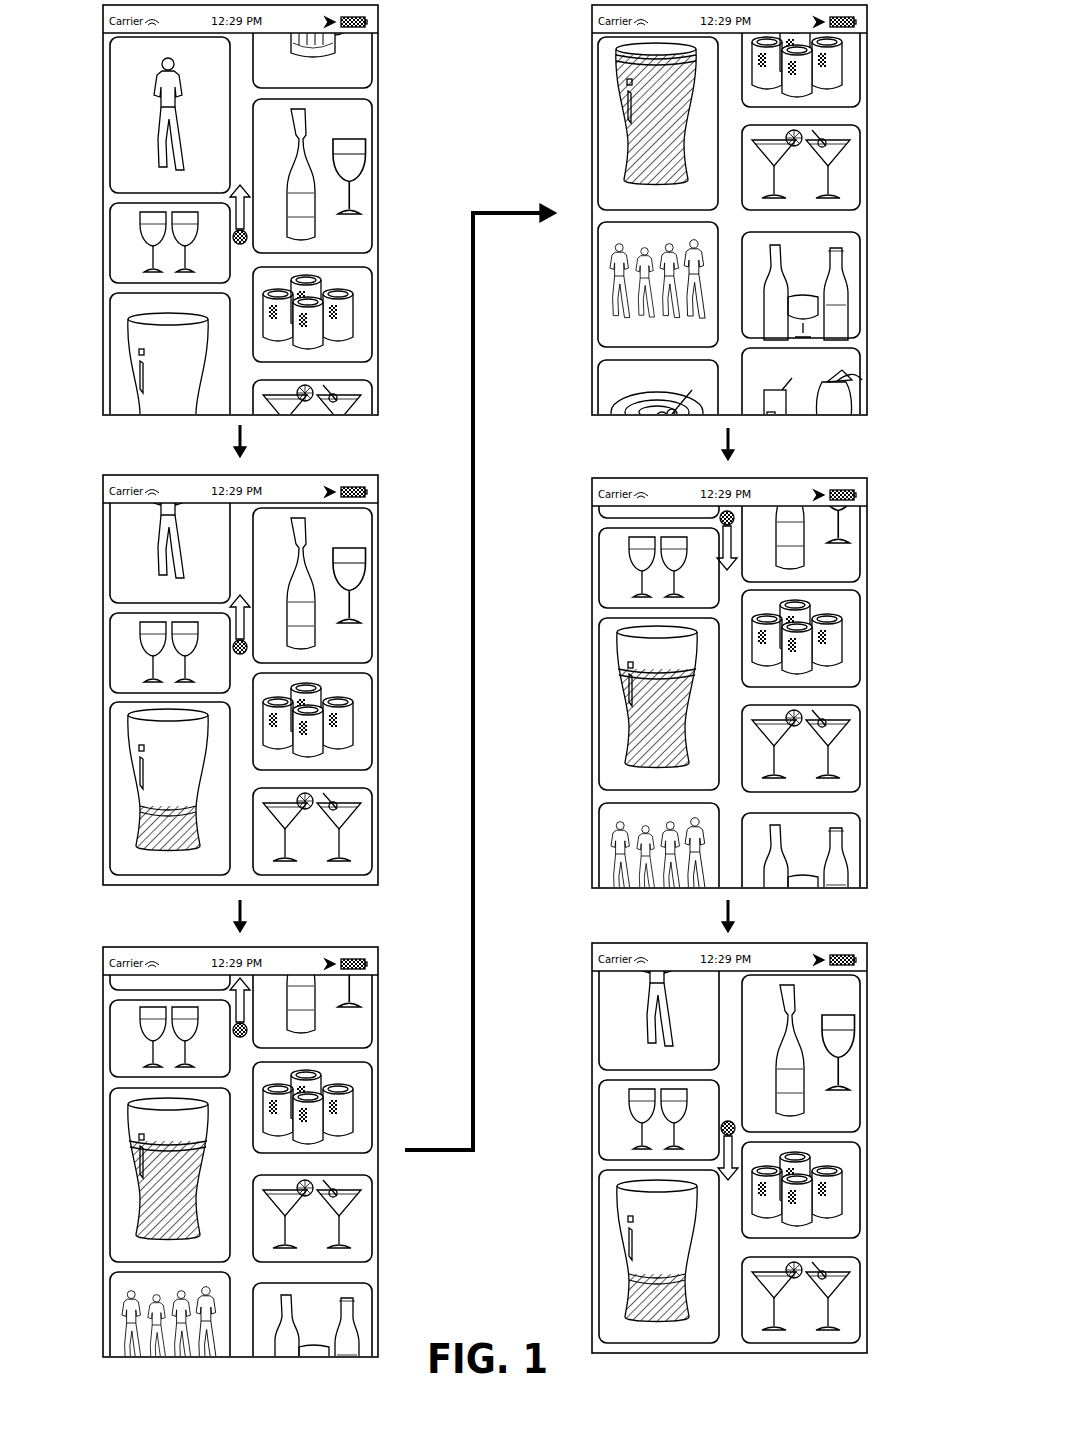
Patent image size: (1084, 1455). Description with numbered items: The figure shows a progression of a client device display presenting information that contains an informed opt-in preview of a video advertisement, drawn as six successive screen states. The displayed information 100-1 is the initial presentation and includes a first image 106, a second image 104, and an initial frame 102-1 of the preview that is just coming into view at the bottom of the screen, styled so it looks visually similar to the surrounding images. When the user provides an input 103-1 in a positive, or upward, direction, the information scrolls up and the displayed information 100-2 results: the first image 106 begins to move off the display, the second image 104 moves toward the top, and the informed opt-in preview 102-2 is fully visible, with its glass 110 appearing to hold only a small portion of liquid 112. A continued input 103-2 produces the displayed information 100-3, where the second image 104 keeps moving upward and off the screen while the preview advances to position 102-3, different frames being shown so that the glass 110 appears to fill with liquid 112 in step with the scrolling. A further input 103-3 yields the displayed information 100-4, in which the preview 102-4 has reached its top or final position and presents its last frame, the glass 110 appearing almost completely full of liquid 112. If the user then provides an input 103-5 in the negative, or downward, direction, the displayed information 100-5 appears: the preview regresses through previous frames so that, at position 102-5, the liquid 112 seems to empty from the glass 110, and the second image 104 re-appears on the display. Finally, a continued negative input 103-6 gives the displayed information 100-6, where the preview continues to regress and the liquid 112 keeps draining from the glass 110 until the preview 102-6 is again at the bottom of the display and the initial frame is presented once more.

The displayed information 100-1 is at (380, 78).
The displayed information 100-2 is at (380, 518).
The displayed information 100-3 is at (380, 990).
The displayed information 100-4 is at (866, 42).
The displayed information 100-5 is at (866, 520).
The displayed information 100-6 is at (866, 985).
The initial frame of informed opt-in preview 102-1 is at (110, 338).
The informed opt-in preview 102-2 is at (110, 808).
The informed opt-in preview 102-3 is at (110, 1168).
The informed opt-in preview 102-4 is at (598, 145).
The informed opt-in preview 102-5 is at (598, 690).
The informed opt-in preview 102-6 is at (598, 1272).
The input 103-1 is at (245, 244).
The input 103-2 is at (245, 654).
The input 103-3 is at (245, 1037).
The input 103-5 is at (722, 520).
The input 103-6 is at (728, 1120).
The second image 104 is at (380, 200).
The first image 106 is at (108, 72).
The glass 110 is at (140, 722).
The liquid 112 is at (150, 835).